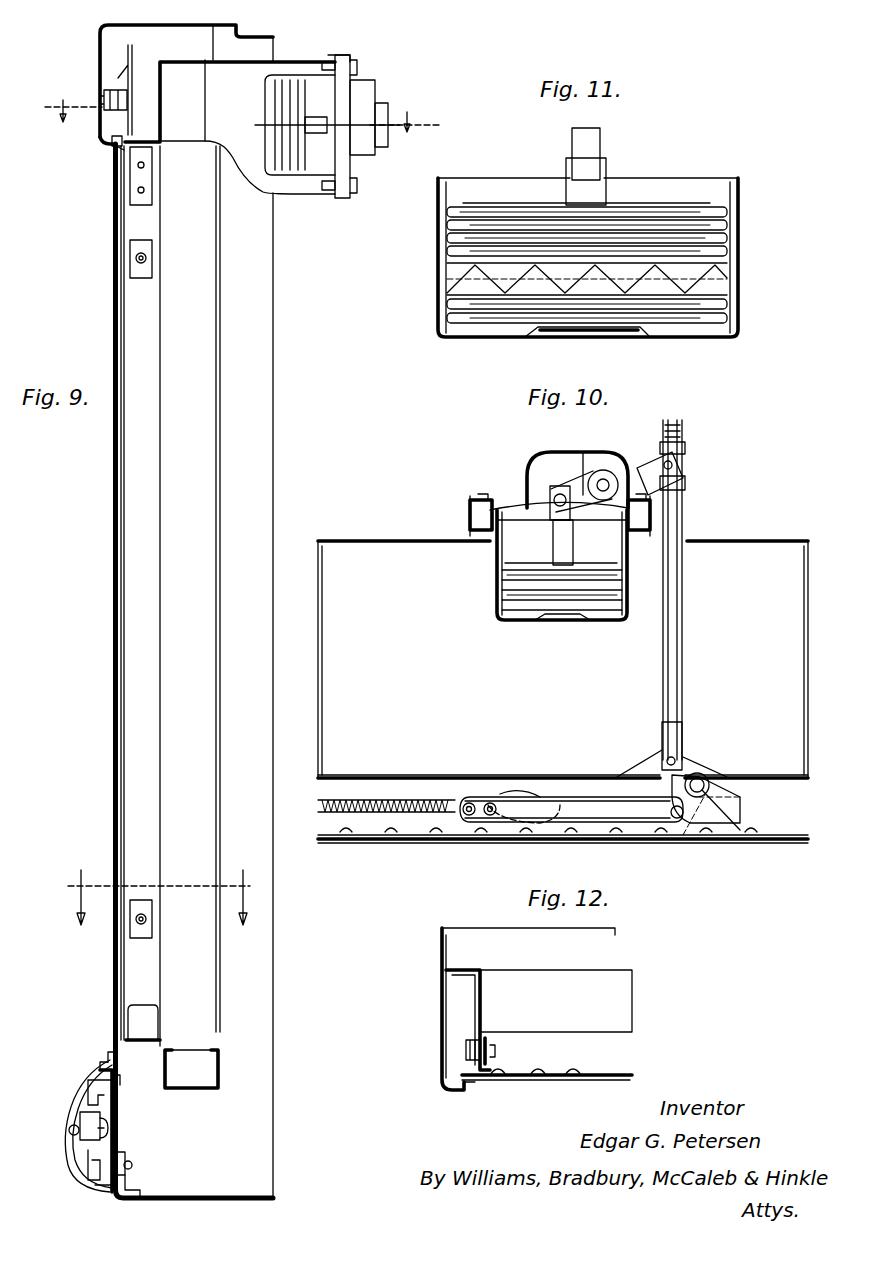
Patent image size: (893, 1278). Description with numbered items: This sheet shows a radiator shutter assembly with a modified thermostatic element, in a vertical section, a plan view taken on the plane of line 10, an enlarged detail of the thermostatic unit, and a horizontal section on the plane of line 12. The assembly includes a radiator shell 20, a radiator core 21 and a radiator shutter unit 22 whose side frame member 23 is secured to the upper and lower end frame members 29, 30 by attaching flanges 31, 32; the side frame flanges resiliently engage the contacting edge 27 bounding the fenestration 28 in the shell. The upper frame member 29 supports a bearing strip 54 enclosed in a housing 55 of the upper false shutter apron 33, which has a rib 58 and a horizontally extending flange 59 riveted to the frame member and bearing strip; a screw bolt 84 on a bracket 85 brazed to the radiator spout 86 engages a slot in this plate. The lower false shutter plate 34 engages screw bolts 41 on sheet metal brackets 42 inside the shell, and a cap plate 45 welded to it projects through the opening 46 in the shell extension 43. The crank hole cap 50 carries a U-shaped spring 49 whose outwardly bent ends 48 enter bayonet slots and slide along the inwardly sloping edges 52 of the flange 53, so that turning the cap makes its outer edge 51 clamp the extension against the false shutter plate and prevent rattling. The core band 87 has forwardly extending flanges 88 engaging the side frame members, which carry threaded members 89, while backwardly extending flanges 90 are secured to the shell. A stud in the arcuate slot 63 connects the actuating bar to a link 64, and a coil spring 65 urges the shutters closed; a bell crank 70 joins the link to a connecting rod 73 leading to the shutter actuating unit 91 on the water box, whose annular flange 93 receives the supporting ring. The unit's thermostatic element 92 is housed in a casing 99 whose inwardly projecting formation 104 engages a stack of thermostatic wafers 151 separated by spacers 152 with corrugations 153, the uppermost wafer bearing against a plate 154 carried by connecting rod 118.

In FIG. 9, the radiator shell 20 is at (260, 44).
In FIG. 12, the radiator shell 20 is at (437, 1068).
In FIG. 9, the radiator core 21 is at (207, 525).
In FIG. 12, the radiator core 21 is at (625, 1015).
In FIG. 9, the radiator shutter unit 22 is at (121, 568).
In FIG. 12, the radiator shutter unit 22 is at (525, 1080).
In FIG. 12, the side frame member 23 is at (488, 1082).
In FIG. 9, the contacting edge 27 is at (104, 1062).
In FIG. 9, the fenestration 28 is at (112, 1052).
In FIG. 9, the upper end frame member 29 is at (140, 142).
In FIG. 9, the lower end frame member 30 is at (146, 1038).
In FIG. 9, the attaching flange 31 is at (148, 190).
In FIG. 9, the attaching flange 32 is at (148, 1020).
In FIG. 9, the upper false shutter apron 33 is at (108, 136).
In FIG. 10, the upper false shutter apron 33 is at (381, 853).
In FIG. 9, the lower false shutter plate 34 is at (96, 1188).
In FIG. 9, the screw bolt 41 is at (130, 1165).
In FIG. 9, the sheet metal bracket 42 is at (138, 1192).
In FIG. 9, the shell extension 43 is at (118, 1077).
In FIG. 9, the cap plate 45 is at (130, 1090).
In FIG. 9, the opening 46 is at (88, 1170).
In FIG. 9, the outwardly bent spring ends 48 is at (105, 1103).
In FIG. 9, the U-shaped spring 49 is at (100, 1122).
In FIG. 9, the crank hole cap 50 is at (80, 1105).
In FIG. 9, the outer edge of crank hole cap 51 is at (102, 1075).
In FIG. 9, the inwardly sloping edges 52 is at (100, 1125).
In FIG. 9, the flange 53 is at (100, 1140).
In FIG. 9, the bearing strip 54 is at (122, 142).
In FIG. 9, the housing 55 is at (114, 144).
In FIG. 10, the rib 58 is at (470, 845).
In FIG. 9, the horizontally extending flange 59 is at (118, 156).
In FIG. 10, the arcuate slot 63 is at (505, 796).
In FIG. 10, the link 64 is at (487, 802).
In FIG. 10, the coil spring 65 is at (348, 800).
In FIG. 10, the bell crank 70 is at (706, 770).
In FIG. 10, the connecting rod 73 is at (680, 630).
In FIG. 9, the screw bolt 84 is at (108, 96).
In FIG. 9, the bracket 85 is at (122, 70).
In FIG. 9, the radiator spout 86 is at (185, 42).
In FIG. 9, the core band 87 is at (187, 430).
In FIG. 9, the forwardly extending flange 88 is at (143, 420).
In FIG. 9, the threaded member 89 is at (152, 258).
In FIG. 12, the threaded member 89 is at (490, 1035).
In FIG. 12, the backwardly extending flange 90 is at (470, 1000).
In FIG. 9, the shutter actuating unit 91 is at (379, 81).
In FIG. 10, the shutter actuating unit 91 is at (520, 492).
In FIG. 9, the thermostatic element 92 is at (295, 180).
In FIG. 9, the annular flange 93 is at (310, 62).
In FIG. 11, the casing 99 is at (738, 196).
In FIG. 10, the casing 99 is at (498, 605).
In FIG. 11, the inwardly projecting formation 104 is at (535, 333).
In FIG. 10, the inwardly projecting formation 104 is at (565, 622).
In FIG. 11, the connecting rod 118 is at (600, 145).
In FIG. 10, the connecting rod 118 is at (552, 538).
In FIG. 11, the thermostatic wafer 151 is at (735, 243).
In FIG. 10, the thermostatic wafer 151 is at (520, 610).
In FIG. 11, the spacer 152 is at (738, 288).
In FIG. 11, the corrugations 153 is at (485, 300).
In FIG. 11, the plate 154 is at (620, 205).
In FIG. 10, the plate 154 is at (520, 560).
In FIG. 9, the section line 10— 10 is at (242, 129).
In FIG. 9, the section line 12— 12 is at (160, 910).